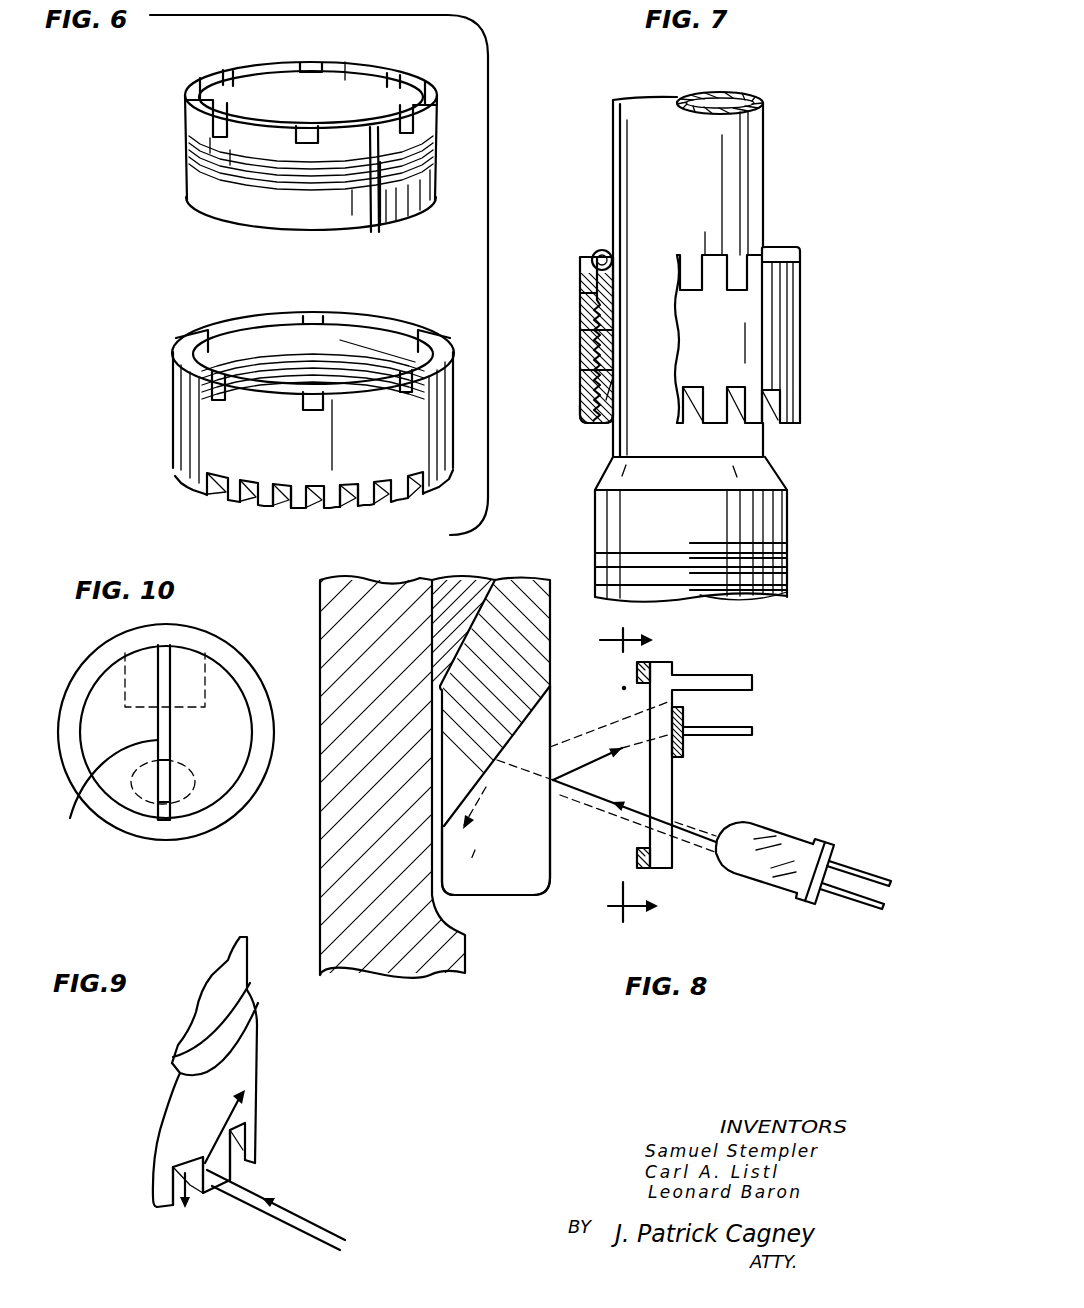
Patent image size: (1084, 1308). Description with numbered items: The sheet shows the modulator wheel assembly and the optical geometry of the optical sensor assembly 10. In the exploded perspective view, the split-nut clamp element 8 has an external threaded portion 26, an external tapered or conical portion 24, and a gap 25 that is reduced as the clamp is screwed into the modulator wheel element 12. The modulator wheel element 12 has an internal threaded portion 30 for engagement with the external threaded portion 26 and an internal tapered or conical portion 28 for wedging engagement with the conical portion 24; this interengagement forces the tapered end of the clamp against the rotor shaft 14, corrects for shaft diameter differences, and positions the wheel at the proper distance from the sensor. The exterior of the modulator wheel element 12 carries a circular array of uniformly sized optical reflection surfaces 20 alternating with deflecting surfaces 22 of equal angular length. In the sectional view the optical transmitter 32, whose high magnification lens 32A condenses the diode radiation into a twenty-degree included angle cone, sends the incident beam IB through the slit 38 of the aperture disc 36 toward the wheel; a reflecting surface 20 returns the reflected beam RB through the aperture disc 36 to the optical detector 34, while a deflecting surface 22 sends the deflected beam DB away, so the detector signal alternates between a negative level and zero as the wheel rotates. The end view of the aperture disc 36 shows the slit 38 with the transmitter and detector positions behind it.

In FIG. 6, the split threaded ring 8 is at (304, 162).
In FIG. 7, the split threaded ring 8 is at (595, 370).
In FIG. 6, the modulator wheel element 12 is at (283, 418).
In FIG. 7, the modulator wheel element 12 is at (737, 335).
In FIG. 8, the modulator wheel element 12 is at (545, 735).
In FIG. 9, the modulator wheel element 12 is at (209, 1098).
In FIG. 7, the rotor shaft 14 is at (691, 347).
In FIG. 8, the rotor shaft 14 is at (316, 612).
In FIG. 9, the rotor shaft 14 is at (235, 975).
In FIG. 6, the optical reflection surfaces 20 is at (363, 510).
In FIG. 7, the optical reflection surfaces 20 is at (578, 412).
In FIG. 8, the optical reflection surfaces 20 is at (552, 852).
In FIG. 9, the optical reflection surfaces 20 is at (215, 1158).
In FIG. 6, the deflecting surfaces 22 is at (300, 508).
In FIG. 7, the deflecting surfaces 22 is at (588, 425).
In FIG. 8, the deflecting surfaces 22 is at (552, 706).
In FIG. 9, the deflecting surfaces 22 is at (173, 1168).
In FIG. 6, the external tapered or conical portion 24 is at (400, 215).
In FIG. 7, the external tapered or conical portion 24 is at (583, 392).
In FIG. 6, the gap 25 is at (372, 222).
In FIG. 6, the external threaded portion 26 is at (437, 172).
In FIG. 7, the external threaded portion 26 is at (580, 357).
In FIG. 6, the internal tapered or conical portion 28 is at (267, 367).
In FIG. 7, the internal tapered or conical portion 28 is at (607, 393).
In FIG. 6, the internal threaded portion 30 is at (375, 340).
In FIG. 7, the internal threaded portion 30 is at (580, 322).
In FIG. 8, the optical transmitter 32 is at (803, 846).
In FIG. 10, the optical transmitter 32 is at (140, 800).
In FIG. 8, the high magnification lens 32A is at (808, 795).
In FIG. 8, the optical detector 34 is at (702, 752).
In FIG. 10, the optical detector 34 is at (125, 690).
In FIG. 8, the aperture disc 36 is at (678, 862).
In FIG. 10, the aperture disc 36 is at (88, 650).
In FIG. 10, the slit 38 is at (70, 818).
In FIG. 8, the optical sensor assembly 10 is at (648, 775).
In FIG. 8, the reflected beam RB is at (612, 748).
In FIG. 9, the reflected beam RB is at (240, 1100).
In FIG. 8, the incident beam IB is at (617, 817).
In FIG. 9, the incident beam IB is at (318, 1240).
In FIG. 8, the deflected beam DB is at (470, 845).
In FIG. 9, the deflected beam DB is at (183, 1215).